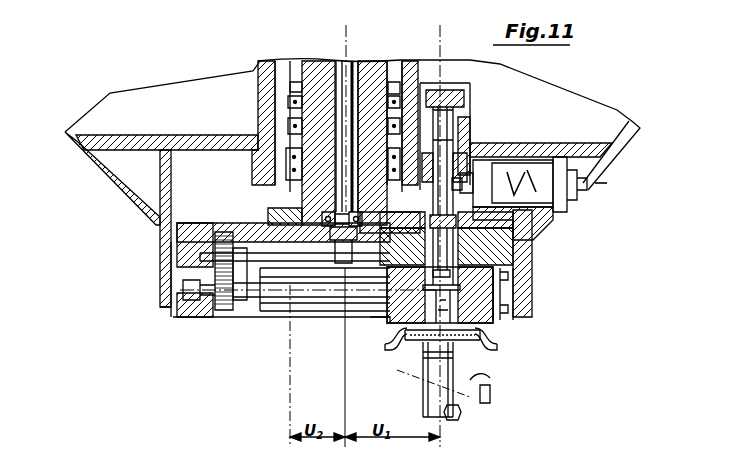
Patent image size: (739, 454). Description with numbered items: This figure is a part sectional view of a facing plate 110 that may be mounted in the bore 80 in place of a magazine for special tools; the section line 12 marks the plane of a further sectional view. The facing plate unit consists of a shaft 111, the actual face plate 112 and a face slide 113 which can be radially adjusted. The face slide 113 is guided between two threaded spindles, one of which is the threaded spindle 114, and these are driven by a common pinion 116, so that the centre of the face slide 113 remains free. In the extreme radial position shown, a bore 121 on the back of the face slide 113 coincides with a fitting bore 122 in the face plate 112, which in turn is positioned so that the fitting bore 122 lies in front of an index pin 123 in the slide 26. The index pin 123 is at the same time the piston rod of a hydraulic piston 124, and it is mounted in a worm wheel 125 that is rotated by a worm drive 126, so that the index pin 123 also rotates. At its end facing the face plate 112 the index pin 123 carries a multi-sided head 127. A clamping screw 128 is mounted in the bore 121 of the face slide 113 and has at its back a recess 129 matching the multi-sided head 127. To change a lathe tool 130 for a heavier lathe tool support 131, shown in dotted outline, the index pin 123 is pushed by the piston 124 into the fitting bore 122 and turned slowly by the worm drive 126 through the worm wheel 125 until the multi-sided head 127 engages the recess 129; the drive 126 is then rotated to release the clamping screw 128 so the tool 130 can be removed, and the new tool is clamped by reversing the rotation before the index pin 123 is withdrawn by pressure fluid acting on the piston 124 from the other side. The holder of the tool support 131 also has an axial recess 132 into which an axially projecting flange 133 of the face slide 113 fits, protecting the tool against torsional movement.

The section line 12- 12 is at (640, 290).
The slide 26 is at (626, 136).
The bore 80 is at (270, 60).
The shaft 111 is at (368, 74).
The hydraulic piston 124 is at (440, 96).
The index pin 123 is at (455, 130).
The worm wheel 125 is at (522, 155).
The worm drive 126 is at (561, 213).
The facing plate 110 is at (226, 330).
The pinion 116 is at (230, 234).
The face plate 112 is at (194, 317).
The threaded spindle 114 is at (276, 296).
The recess 129 is at (416, 259).
The fitting bore 122 is at (462, 250).
The bore 121 is at (449, 283).
The clamping screw 128 is at (428, 300).
The multi-sided head 127 is at (456, 222).
The face slide 113 is at (391, 321).
The axial recess 132 is at (478, 333).
The axially projecting flange 133 is at (392, 346).
The lathe tool support 131 is at (493, 354).
The lathe tool 130 is at (462, 413).